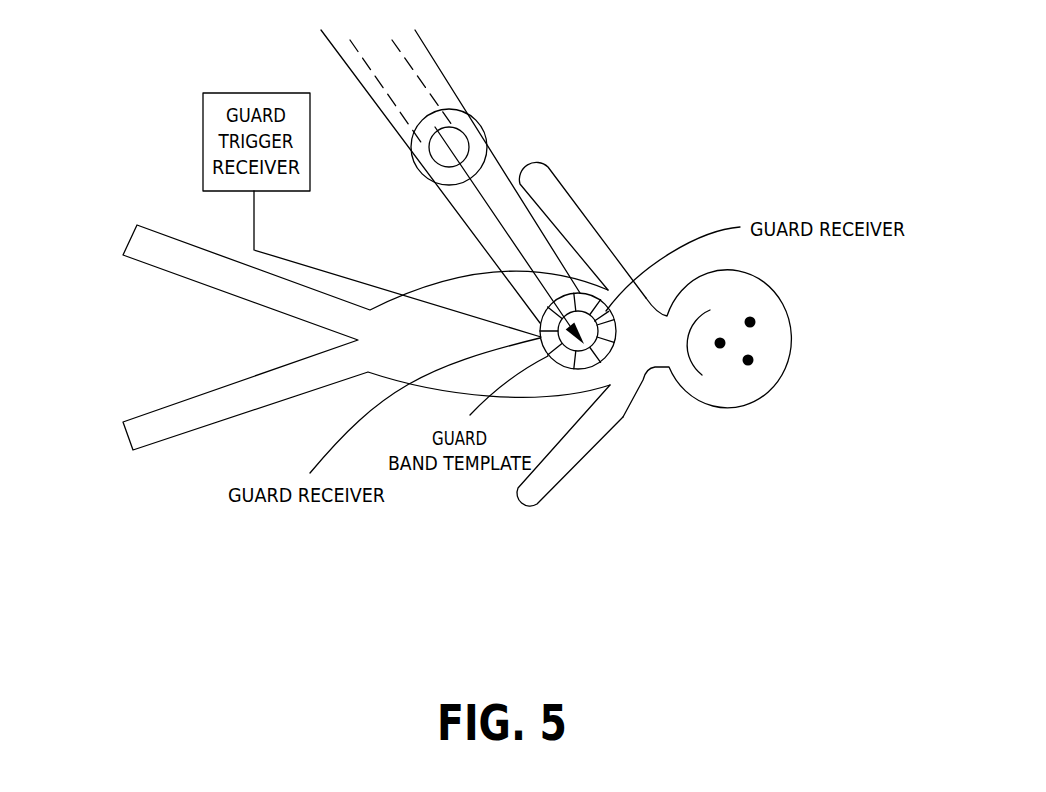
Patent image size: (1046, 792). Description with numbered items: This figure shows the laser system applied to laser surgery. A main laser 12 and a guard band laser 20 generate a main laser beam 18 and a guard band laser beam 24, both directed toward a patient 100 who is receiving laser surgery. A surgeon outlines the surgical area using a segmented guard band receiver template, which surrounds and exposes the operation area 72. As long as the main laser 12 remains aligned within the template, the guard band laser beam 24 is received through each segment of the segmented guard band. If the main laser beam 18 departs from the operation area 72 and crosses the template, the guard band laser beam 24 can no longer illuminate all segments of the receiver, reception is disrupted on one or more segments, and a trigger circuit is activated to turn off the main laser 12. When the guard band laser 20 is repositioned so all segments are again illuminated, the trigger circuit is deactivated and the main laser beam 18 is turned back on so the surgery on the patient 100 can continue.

The main laser 12 is at (449, 127).
The guard band laser 20 is at (468, 118).
The main laser beam 18 is at (503, 185).
The guard band laser beam 24 is at (558, 232).
The operation area 72 is at (600, 360).
The patient 100 is at (98, 446).